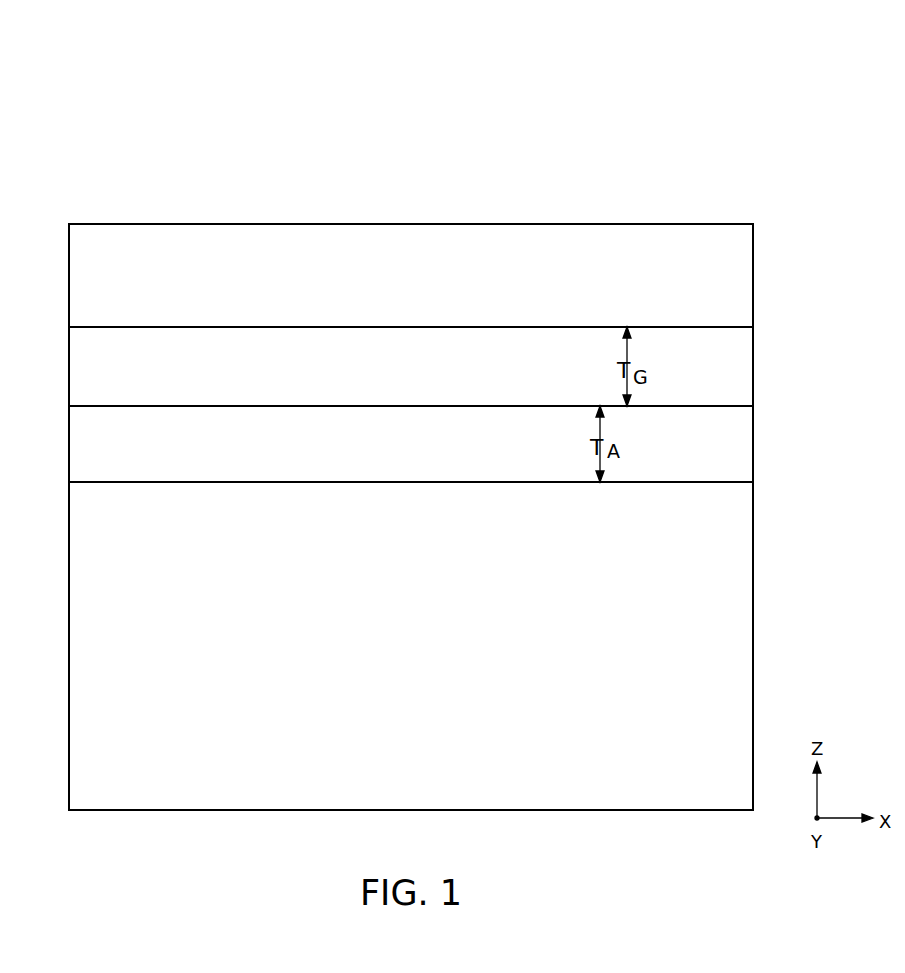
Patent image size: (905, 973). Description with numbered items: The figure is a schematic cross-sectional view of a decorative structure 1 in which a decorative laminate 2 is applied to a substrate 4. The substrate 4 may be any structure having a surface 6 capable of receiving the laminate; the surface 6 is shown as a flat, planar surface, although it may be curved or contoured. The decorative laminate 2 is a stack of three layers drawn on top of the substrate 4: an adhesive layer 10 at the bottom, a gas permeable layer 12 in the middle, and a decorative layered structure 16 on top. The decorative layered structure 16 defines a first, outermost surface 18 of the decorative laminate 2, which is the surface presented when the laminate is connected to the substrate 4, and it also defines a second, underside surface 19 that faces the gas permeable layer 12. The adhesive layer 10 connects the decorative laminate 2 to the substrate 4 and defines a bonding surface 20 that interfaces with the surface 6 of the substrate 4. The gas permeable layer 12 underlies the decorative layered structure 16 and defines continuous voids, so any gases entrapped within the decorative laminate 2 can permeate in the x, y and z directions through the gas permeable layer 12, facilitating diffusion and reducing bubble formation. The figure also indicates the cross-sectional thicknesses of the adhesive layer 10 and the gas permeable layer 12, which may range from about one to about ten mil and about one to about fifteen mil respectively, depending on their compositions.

The decorative structure 1 is at (667, 122).
The decorative laminate 2 is at (58, 218).
The substrate 4 is at (753, 647).
The surface 6 is at (188, 482).
The adhesive layer 10 is at (753, 445).
The gas permeable layer 12 is at (753, 367).
The decorative layered structure 16 is at (753, 280).
The first surface 18 is at (426, 224).
The second surface 19 is at (549, 327).
The bonding surface 20 is at (544, 482).